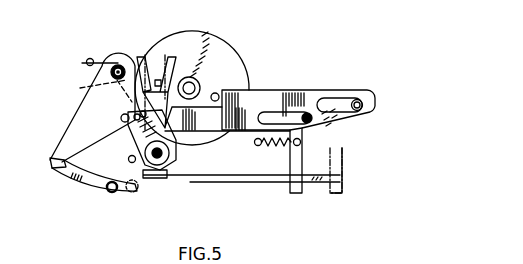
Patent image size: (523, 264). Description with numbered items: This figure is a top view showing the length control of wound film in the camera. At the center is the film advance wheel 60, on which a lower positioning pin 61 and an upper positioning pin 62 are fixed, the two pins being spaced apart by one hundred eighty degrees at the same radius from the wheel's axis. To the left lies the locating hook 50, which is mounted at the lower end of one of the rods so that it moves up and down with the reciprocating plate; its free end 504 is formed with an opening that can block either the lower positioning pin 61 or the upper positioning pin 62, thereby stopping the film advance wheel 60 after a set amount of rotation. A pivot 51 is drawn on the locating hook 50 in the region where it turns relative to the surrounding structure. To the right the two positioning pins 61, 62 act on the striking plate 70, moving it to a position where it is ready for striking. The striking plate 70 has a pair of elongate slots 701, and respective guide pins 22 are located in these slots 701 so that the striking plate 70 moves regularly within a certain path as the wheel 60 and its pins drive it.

The guide pins 22 is at (358, 100).
The locating hook 50 is at (129, 158).
The pivot 51 is at (160, 178).
The film advance wheel 60 is at (232, 50).
The lower positioning pin 61 is at (158, 80).
The upper positioning pin 62 is at (215, 93).
The striking plate 70 is at (295, 160).
The elongate slots 701 is at (275, 113).
The free end 504 is at (97, 80).